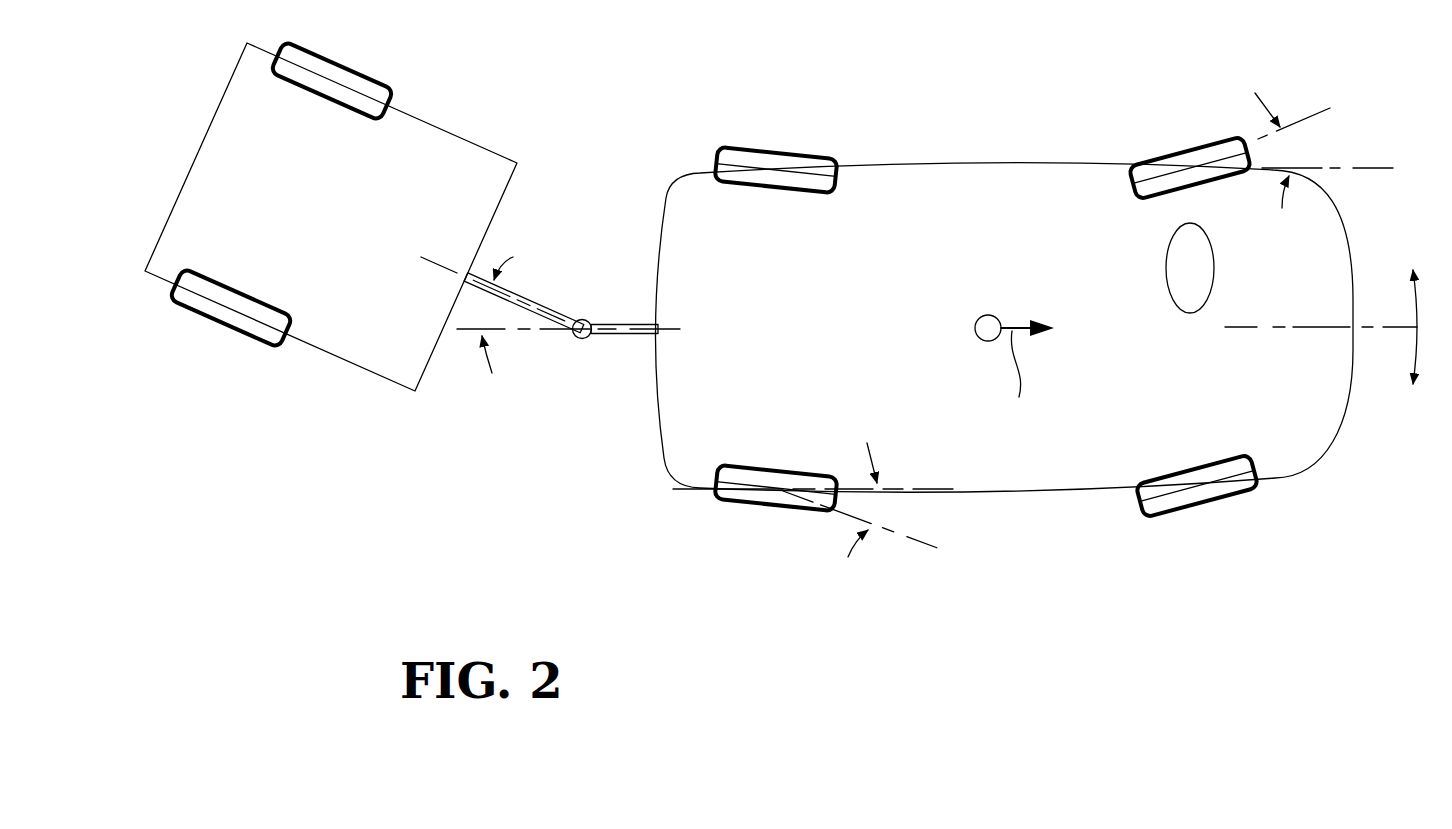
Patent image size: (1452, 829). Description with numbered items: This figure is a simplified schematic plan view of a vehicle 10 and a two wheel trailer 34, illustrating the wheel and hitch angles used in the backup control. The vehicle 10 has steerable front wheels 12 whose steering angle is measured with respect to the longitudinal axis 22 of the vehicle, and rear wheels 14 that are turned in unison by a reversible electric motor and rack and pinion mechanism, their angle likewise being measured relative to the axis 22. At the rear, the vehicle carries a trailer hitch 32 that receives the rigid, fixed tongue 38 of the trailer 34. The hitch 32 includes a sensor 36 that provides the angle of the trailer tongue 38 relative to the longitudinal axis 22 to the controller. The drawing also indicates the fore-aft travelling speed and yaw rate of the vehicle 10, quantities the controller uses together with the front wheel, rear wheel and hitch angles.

The vehicle 10 is at (960, 162).
The front wheels 12 is at (1180, 150).
The rear wheels 14 is at (775, 150).
The longitudinal axis 22 is at (515, 334).
The trailer hitch 32 is at (622, 338).
The two wheel trailer 34 is at (437, 127).
The sensor 36 is at (583, 320).
The trailer tongue 38 is at (528, 297).